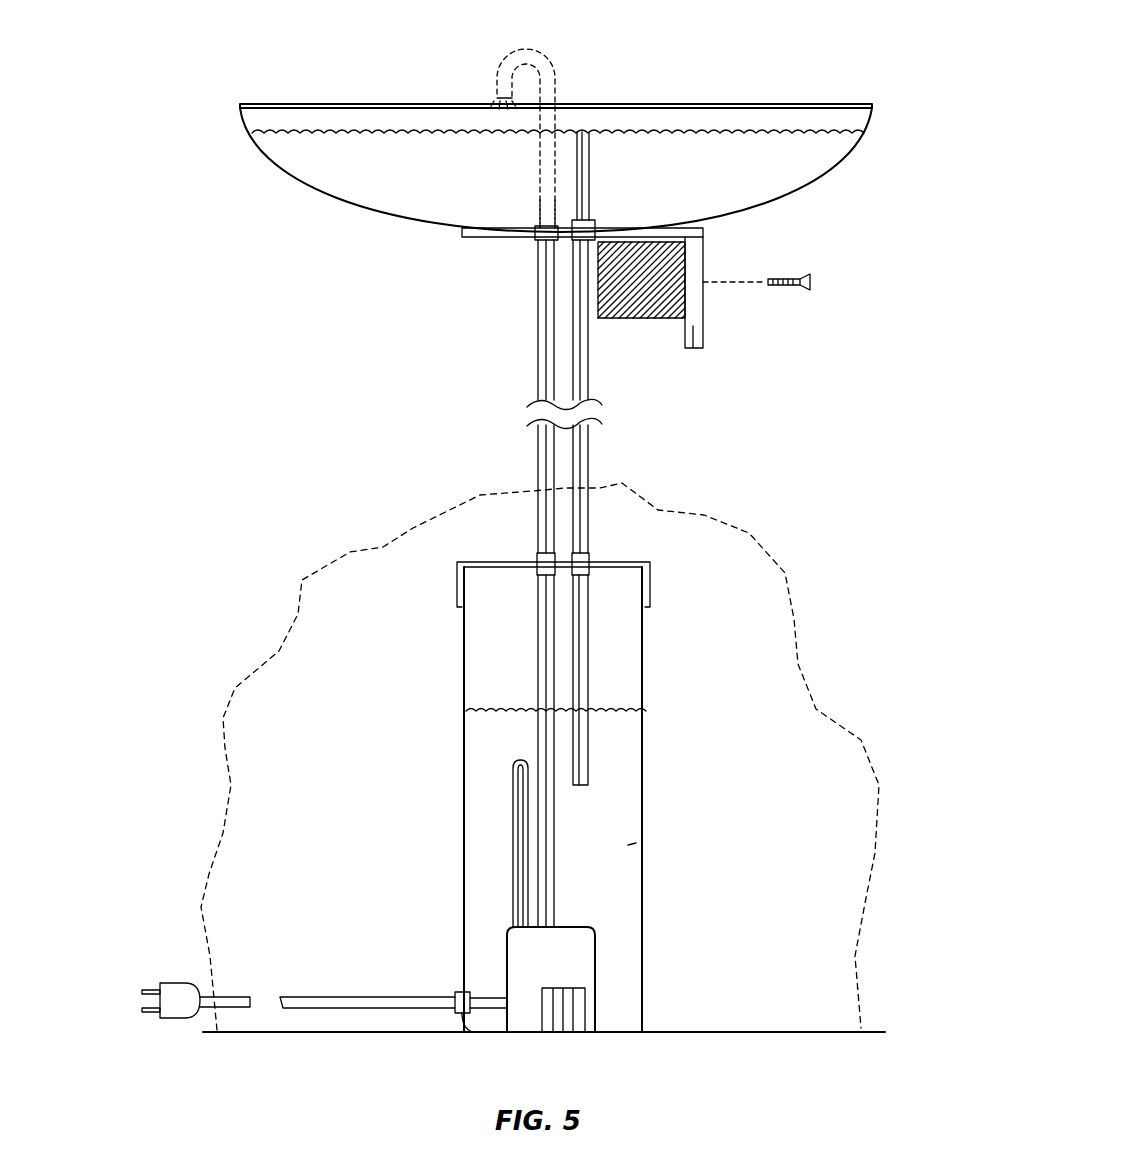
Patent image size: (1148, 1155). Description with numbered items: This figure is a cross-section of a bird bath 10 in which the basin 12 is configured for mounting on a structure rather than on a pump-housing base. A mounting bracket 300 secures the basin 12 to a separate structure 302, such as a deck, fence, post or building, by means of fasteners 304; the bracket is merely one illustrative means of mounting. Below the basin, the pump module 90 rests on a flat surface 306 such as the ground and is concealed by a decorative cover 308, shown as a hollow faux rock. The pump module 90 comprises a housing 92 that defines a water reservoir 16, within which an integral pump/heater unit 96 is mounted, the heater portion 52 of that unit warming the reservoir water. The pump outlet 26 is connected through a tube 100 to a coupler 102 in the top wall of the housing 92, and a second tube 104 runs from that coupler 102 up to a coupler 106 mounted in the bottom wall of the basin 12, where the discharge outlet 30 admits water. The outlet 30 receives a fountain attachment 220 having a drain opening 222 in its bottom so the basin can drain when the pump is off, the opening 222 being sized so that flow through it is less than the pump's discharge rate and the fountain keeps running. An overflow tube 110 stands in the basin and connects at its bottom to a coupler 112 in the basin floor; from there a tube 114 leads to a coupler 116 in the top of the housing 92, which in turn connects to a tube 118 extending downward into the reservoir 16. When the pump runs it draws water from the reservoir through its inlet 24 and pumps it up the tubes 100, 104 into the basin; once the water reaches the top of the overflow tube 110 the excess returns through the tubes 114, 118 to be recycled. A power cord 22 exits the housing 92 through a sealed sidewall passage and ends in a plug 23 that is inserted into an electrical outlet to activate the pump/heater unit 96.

The bird bath 10 is at (742, 57).
The basin 12 is at (793, 202).
The power cord 22 is at (338, 996).
The plug 23 is at (175, 1020).
The pump inlet 24 is at (587, 1028).
The pump outlet 26 is at (550, 926).
The discharge outlet 30 is at (538, 228).
The heater 52 is at (512, 788).
The pump module 90 is at (645, 719).
The housing 92 is at (645, 798).
The pump/heater unit 96 is at (463, 240).
The tube 100 is at (537, 687).
The coupler 102 is at (537, 560).
The second tube 104 is at (540, 358).
The coupler 106 is at (537, 246).
The overflow tube 110 is at (592, 178).
The coupler 112 is at (595, 224).
The tube 114 is at (588, 365).
The coupler 116 is at (589, 560).
The tube 118 is at (587, 687).
The water reservoir 16 is at (632, 845).
The fountain attachment 220 is at (528, 48).
The drain opening 222 is at (540, 218).
The mounting bracket 300 is at (703, 326).
The separate structure 302 is at (660, 318).
The fasteners 304 is at (790, 288).
The flat surface 306 is at (878, 1032).
The decorative cover 308 is at (803, 664).